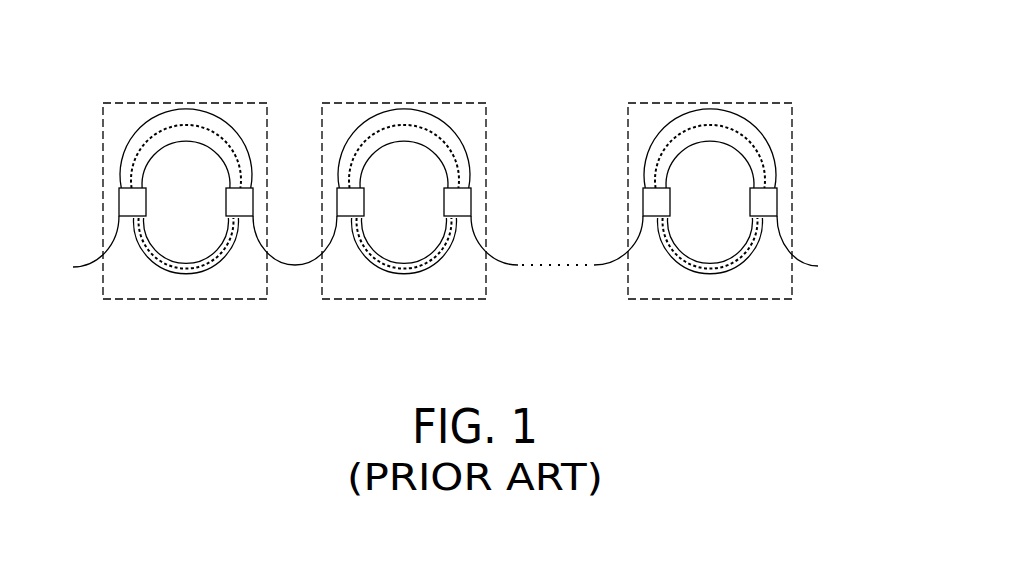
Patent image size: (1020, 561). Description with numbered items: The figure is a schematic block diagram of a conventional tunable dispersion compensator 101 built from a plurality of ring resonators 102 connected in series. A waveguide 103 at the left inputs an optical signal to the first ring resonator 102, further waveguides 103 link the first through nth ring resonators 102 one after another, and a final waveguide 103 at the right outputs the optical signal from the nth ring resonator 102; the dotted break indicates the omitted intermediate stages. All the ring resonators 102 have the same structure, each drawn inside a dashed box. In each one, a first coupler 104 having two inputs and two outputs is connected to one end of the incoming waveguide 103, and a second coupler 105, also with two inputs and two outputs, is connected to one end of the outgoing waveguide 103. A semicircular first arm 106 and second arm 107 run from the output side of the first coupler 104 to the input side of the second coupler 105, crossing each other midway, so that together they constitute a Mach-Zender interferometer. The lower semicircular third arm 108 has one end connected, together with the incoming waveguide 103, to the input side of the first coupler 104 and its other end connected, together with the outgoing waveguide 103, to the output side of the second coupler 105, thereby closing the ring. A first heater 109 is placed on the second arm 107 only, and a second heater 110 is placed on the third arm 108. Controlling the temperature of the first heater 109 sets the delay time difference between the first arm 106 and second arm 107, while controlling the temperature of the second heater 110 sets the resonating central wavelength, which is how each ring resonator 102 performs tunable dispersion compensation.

The tunable dispersion compensator 101 is at (795, 61).
The ring resonator 102 is at (735, 82).
The waveguide 103 is at (830, 247).
The first coupler 104 is at (119, 197).
The second coupler 105 is at (254, 212).
The first arm 106 is at (139, 157).
The second arm 107 is at (143, 172).
The third arm 108 is at (187, 262).
The first heater 109 is at (230, 150).
The second heater 110 is at (181, 269).